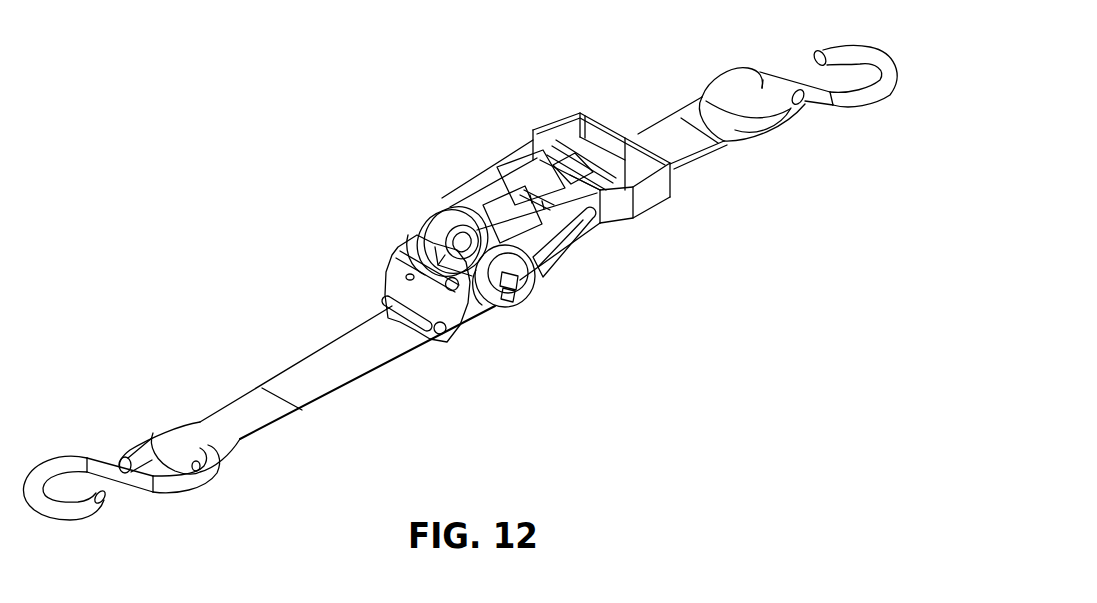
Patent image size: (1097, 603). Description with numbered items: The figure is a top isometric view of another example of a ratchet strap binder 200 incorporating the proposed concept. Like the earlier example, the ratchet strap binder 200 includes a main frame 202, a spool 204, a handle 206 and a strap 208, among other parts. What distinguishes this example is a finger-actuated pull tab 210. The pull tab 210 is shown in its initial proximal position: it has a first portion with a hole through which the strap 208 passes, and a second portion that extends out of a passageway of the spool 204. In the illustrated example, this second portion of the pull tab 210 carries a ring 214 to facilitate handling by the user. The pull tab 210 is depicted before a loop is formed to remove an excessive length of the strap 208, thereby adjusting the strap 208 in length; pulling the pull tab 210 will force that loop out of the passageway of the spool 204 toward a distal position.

The ratchet strap binder 200 is at (351, 90).
The main frame 202 is at (452, 326).
The spool 204 is at (519, 287).
The handle 206 is at (571, 115).
The strap 208 is at (266, 365).
The pull tab 210 is at (433, 209).
The ring 214 is at (448, 235).